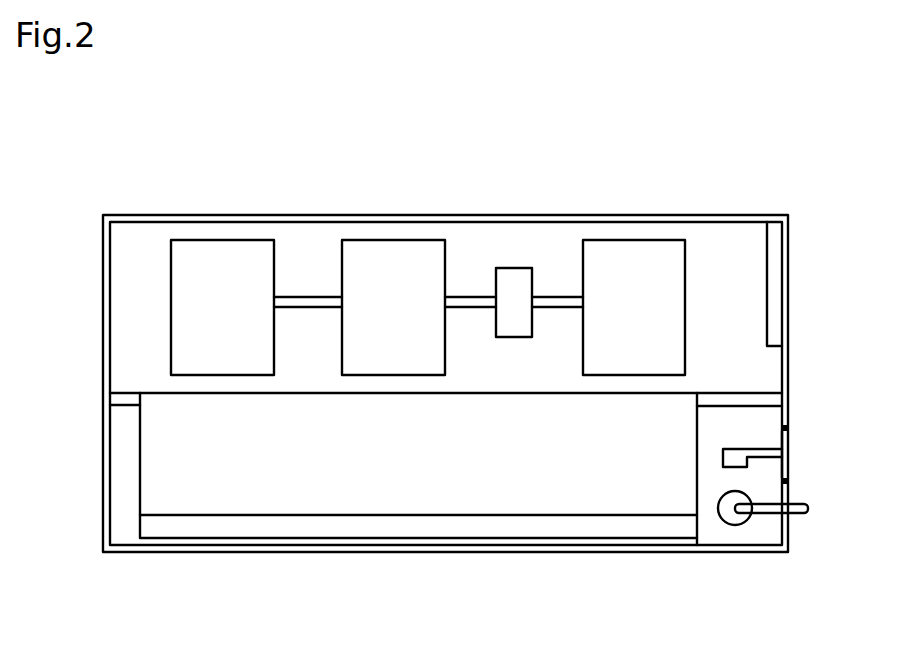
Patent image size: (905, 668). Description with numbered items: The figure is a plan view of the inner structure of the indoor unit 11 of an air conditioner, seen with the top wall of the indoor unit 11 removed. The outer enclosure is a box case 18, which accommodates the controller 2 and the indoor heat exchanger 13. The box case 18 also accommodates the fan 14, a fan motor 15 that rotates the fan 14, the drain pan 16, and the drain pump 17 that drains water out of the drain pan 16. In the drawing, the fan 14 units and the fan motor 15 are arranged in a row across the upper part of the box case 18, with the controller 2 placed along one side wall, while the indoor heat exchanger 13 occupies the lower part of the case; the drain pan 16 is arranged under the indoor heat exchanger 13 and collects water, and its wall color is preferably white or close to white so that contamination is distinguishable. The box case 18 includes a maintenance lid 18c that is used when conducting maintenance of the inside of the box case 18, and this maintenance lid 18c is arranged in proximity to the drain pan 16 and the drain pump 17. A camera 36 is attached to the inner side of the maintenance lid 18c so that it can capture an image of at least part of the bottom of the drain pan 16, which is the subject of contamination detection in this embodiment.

The indoor unit 11 is at (747, 157).
The box case 18 is at (700, 214).
The controller 2 is at (777, 279).
The fan 14 is at (224, 240).
The fan motor 15 is at (514, 268).
The indoor heat exchanger 13 is at (522, 527).
The drain pan 16 is at (708, 537).
The drain pump 17 is at (737, 524).
The camera 36 is at (728, 467).
The maintenance lid 18c is at (789, 436).